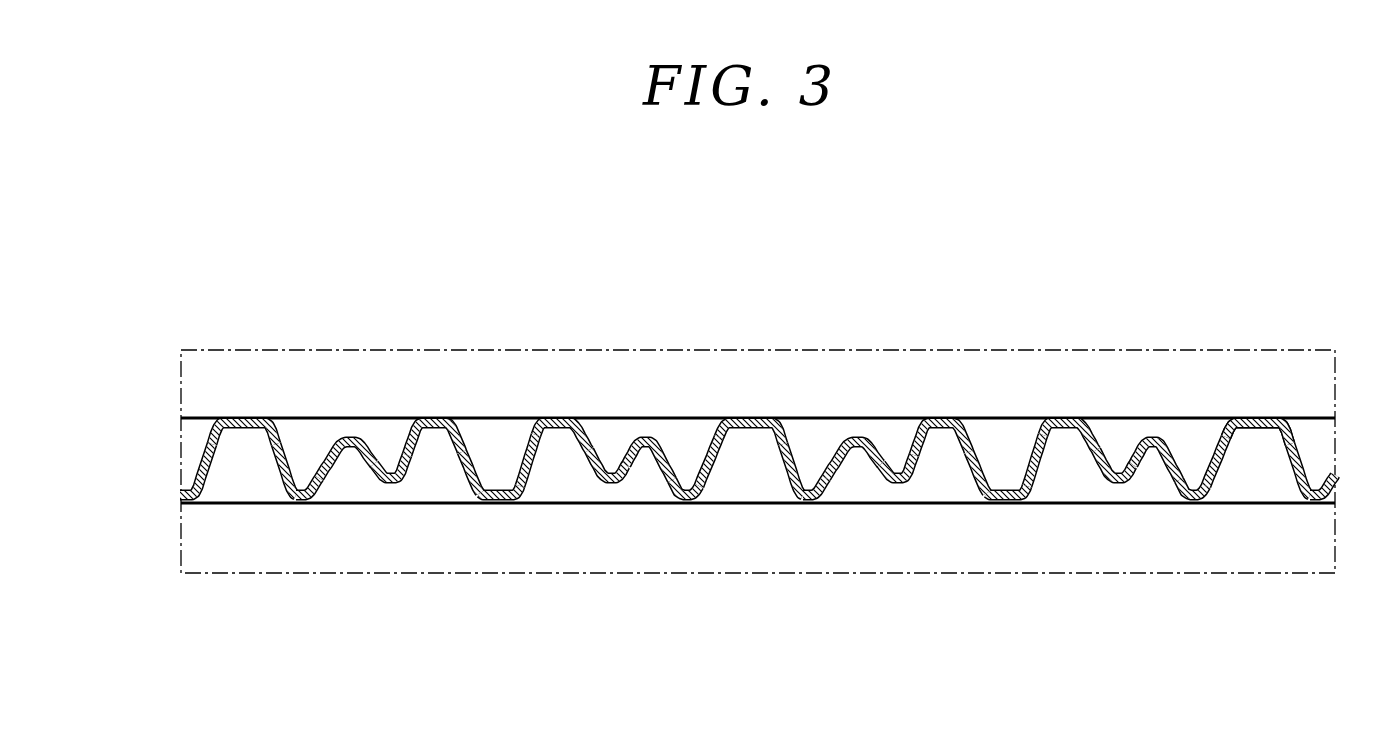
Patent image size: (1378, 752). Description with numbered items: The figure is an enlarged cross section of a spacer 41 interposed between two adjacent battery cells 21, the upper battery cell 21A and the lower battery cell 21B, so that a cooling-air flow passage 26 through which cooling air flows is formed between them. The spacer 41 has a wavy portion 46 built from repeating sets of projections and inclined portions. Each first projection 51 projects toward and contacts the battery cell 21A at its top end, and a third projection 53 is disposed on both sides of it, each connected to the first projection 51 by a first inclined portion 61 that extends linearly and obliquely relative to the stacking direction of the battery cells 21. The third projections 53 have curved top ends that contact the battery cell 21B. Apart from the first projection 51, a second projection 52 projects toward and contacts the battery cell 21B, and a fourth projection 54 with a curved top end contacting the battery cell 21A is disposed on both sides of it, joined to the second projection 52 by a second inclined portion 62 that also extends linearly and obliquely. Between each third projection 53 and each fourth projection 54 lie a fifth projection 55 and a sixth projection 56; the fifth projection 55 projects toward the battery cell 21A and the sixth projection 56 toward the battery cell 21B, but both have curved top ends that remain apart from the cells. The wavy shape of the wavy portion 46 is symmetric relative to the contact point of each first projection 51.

The battery cell 21 is at (758, 462).
The battery cell 21A is at (797, 377).
The battery cell 21B is at (790, 545).
The cooling-air flow passage 26 is at (1257, 453).
The spacer 41 is at (713, 463).
The wavy portion 46 is at (713, 463).
The first projection 51 is at (244, 418).
The second projection 52 is at (495, 500).
The third projection 53 is at (303, 497).
The fourth projection 54 is at (437, 418).
The fifth projection 55 is at (352, 432).
The sixth projection 56 is at (390, 488).
The first inclined portion 61 is at (270, 463).
The second inclined portion 62 is at (523, 463).